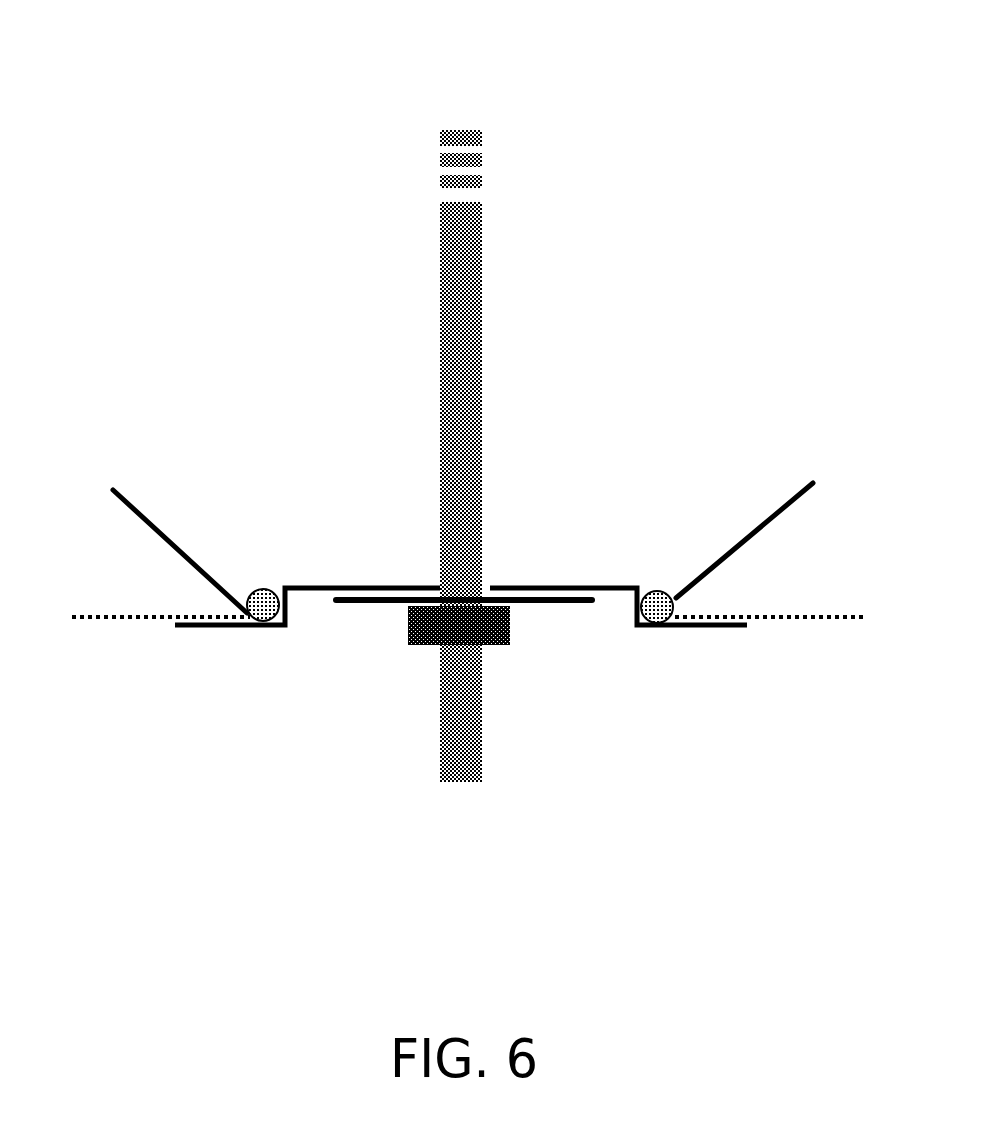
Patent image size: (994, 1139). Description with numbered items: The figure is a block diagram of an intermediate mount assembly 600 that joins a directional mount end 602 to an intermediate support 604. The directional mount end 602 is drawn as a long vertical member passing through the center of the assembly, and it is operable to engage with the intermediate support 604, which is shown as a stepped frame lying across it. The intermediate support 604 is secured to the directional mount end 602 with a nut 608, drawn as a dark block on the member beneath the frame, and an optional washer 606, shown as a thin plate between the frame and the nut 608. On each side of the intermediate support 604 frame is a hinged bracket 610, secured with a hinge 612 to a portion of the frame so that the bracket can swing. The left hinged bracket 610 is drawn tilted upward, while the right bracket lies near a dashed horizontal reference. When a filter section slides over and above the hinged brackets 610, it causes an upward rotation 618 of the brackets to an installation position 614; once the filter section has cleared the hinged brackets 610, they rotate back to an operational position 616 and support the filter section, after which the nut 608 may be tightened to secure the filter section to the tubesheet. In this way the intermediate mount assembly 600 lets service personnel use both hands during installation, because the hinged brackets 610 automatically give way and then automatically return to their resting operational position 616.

The intermediate mount assembly 600 is at (418, 108).
The directional mount end 602 is at (482, 296).
The intermediate support 604 is at (612, 586).
The washer 606 is at (342, 602).
The nut 608 is at (510, 630).
The hinged bracket 610 is at (130, 500).
The hinge 612 is at (266, 588).
The installation position 614 is at (805, 513).
The operational position 616 is at (820, 604).
The upward rotation 618 is at (151, 556).